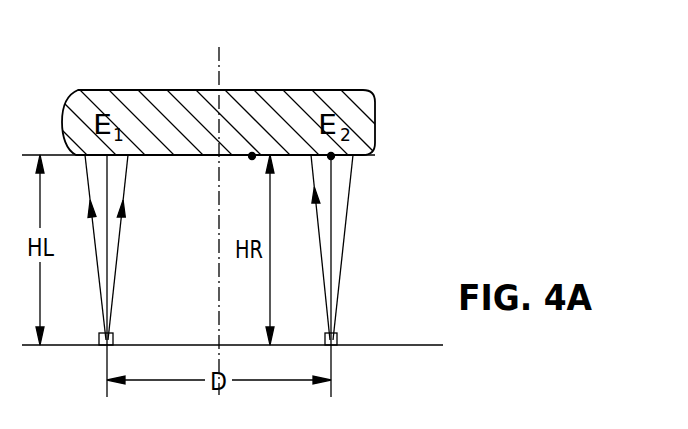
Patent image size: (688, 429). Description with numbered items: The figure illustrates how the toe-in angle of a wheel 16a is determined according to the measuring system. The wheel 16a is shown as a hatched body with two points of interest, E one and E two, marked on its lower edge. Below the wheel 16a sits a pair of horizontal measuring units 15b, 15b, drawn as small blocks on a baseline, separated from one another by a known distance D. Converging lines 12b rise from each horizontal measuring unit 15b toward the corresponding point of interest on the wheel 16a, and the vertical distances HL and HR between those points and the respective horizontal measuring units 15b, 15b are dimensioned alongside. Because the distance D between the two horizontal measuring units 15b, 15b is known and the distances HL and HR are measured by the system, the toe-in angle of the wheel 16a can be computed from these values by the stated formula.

The wheel 16a is at (352, 100).
The light beams 12b is at (99, 283).
The horizontal measuring unit 15b is at (97, 338).